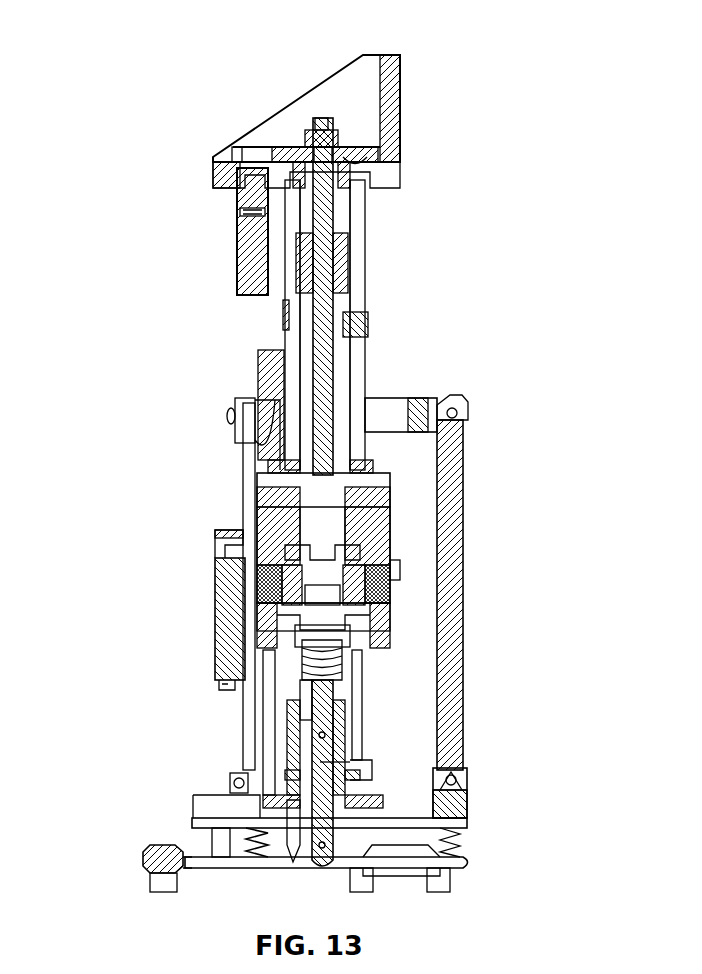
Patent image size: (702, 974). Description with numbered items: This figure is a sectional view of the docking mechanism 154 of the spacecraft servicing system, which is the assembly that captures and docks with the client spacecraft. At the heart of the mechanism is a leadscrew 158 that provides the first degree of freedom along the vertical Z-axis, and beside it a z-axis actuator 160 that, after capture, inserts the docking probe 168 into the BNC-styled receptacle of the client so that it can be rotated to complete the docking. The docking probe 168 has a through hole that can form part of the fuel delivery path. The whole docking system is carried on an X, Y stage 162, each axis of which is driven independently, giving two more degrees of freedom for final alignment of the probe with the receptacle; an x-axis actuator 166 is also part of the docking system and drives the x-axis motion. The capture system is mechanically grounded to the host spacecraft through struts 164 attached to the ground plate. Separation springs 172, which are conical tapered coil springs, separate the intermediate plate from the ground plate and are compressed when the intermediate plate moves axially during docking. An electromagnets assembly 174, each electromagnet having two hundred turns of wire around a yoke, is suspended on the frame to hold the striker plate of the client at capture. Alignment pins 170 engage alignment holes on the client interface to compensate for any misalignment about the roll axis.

The docking mechanism 154 is at (226, 40).
The leadscrew 158 is at (322, 237).
The z-axis actuator 160 is at (237, 258).
The X, Y stage 162 is at (262, 520).
The struts 164 is at (447, 565).
The x-axis actuator 166 is at (218, 616).
The docking probe 168 is at (322, 762).
The alignment pins 170 is at (292, 820).
The separation springs 172 is at (246, 848).
The electromagnets assembly 174 is at (143, 866).